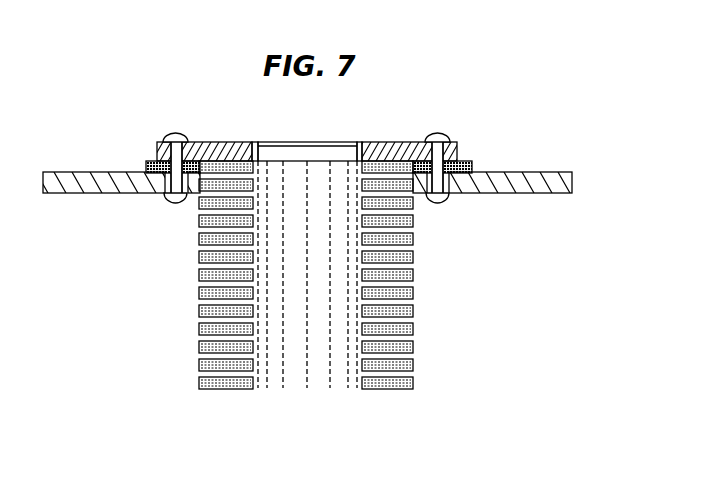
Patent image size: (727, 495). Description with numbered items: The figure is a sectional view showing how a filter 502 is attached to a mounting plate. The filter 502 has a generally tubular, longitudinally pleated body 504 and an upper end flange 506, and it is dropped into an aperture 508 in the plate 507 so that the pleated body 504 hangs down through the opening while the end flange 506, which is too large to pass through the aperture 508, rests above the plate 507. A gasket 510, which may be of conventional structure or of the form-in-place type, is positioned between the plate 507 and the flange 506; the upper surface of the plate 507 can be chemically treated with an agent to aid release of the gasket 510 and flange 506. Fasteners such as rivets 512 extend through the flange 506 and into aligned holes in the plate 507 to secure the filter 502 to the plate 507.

The filter 502 is at (217, 121).
The longitudinally pleated body 504 is at (414, 312).
The upper end flange 506 is at (394, 141).
The plate 507 is at (78, 172).
The aperture 508 is at (417, 199).
The gasket 510 is at (460, 160).
The rivets 512 is at (176, 203).